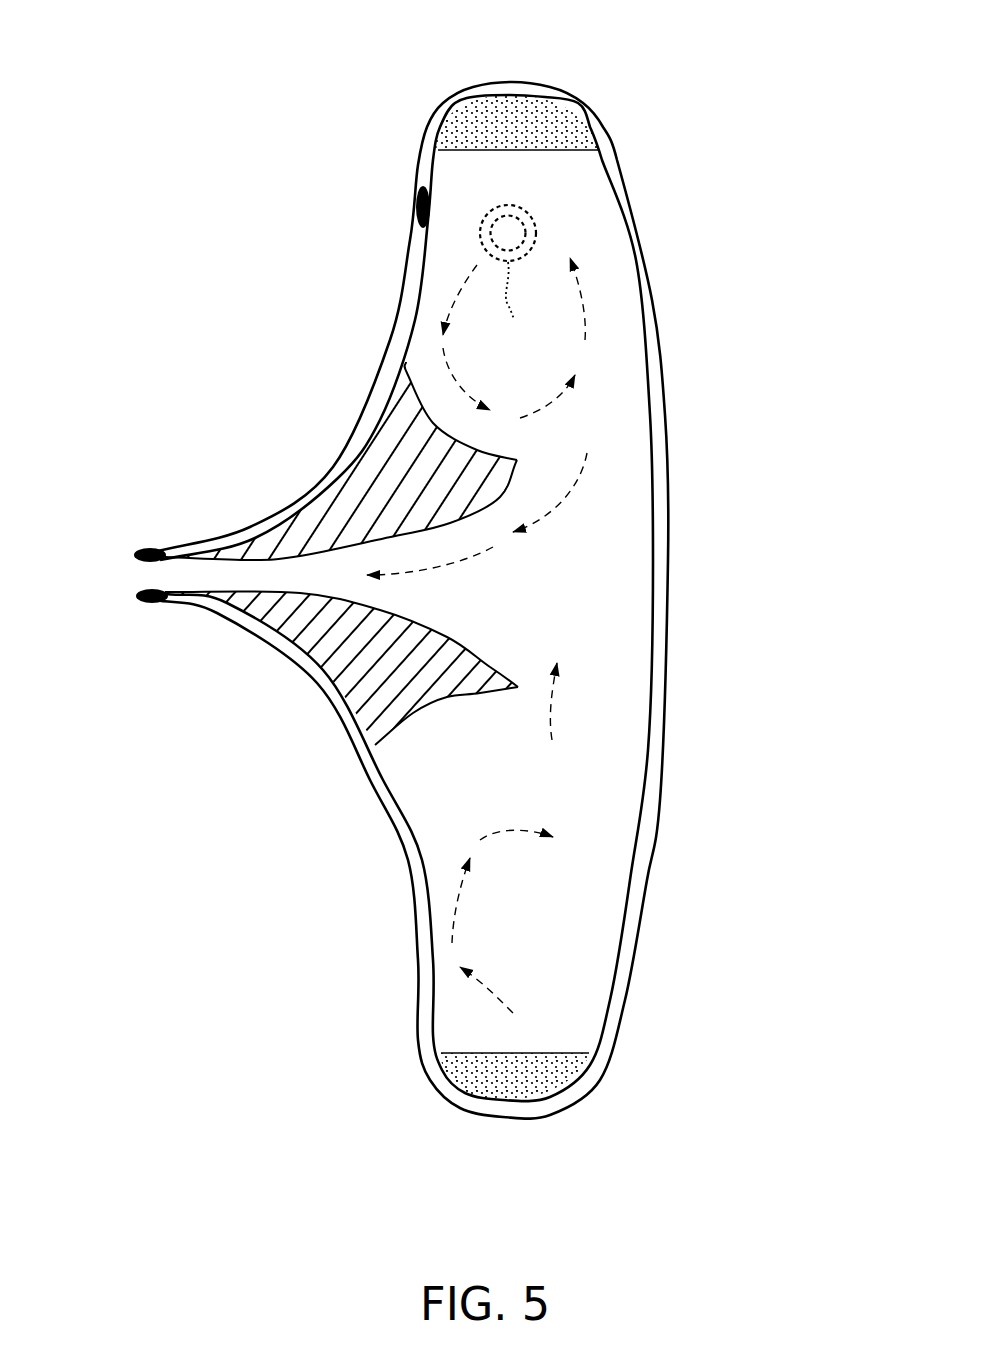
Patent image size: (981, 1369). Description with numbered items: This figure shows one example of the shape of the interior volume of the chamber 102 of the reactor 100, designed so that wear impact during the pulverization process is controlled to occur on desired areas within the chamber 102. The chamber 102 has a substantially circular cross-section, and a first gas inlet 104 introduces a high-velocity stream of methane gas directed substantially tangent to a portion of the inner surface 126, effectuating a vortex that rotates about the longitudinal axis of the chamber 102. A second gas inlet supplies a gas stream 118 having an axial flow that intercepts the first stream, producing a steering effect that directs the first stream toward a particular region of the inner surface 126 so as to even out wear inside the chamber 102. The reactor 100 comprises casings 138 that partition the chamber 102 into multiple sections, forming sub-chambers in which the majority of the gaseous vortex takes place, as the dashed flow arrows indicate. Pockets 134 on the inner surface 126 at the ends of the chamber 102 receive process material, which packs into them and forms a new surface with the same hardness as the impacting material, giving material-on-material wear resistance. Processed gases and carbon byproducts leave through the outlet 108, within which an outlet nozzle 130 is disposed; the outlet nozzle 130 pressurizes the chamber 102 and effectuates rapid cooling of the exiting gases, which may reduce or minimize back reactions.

The reactor 100 is at (786, 43).
The chamber 102 is at (667, 417).
The first gas inlet 104 is at (510, 279).
The outlet 108 is at (185, 573).
The gas stream 118 is at (417, 212).
The inner surface 126 is at (652, 628).
The outlet nozzle 130 is at (136, 555).
The pockets 134 is at (550, 110).
The casings 138 is at (317, 520).